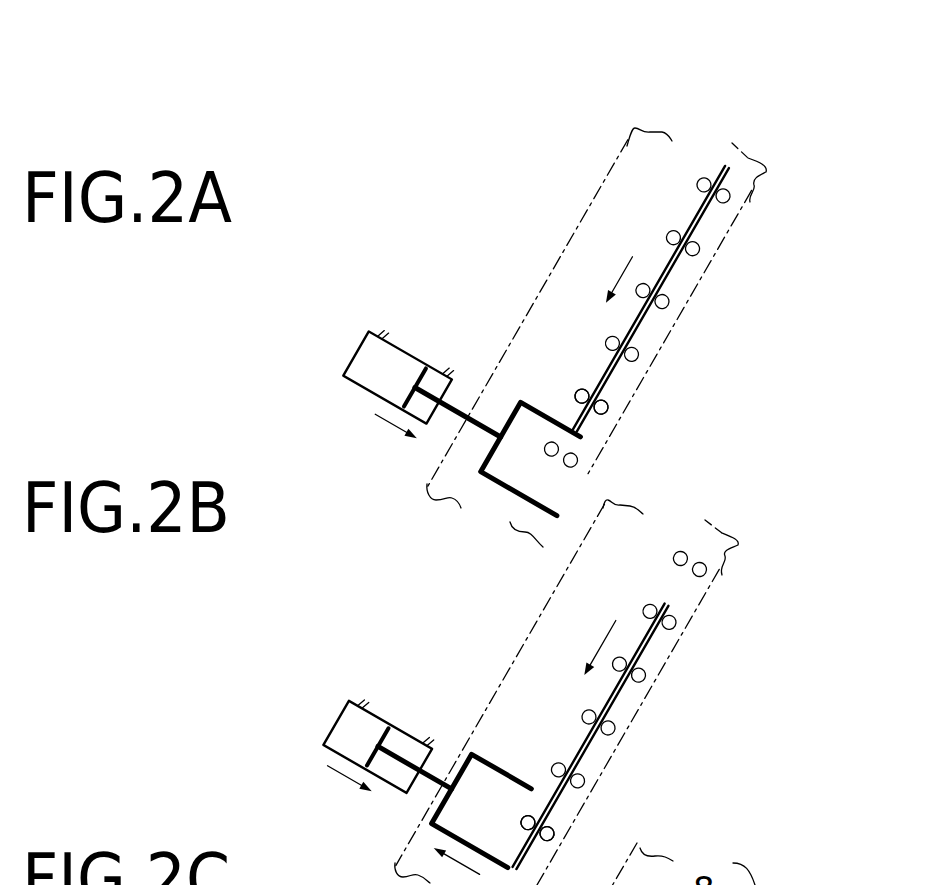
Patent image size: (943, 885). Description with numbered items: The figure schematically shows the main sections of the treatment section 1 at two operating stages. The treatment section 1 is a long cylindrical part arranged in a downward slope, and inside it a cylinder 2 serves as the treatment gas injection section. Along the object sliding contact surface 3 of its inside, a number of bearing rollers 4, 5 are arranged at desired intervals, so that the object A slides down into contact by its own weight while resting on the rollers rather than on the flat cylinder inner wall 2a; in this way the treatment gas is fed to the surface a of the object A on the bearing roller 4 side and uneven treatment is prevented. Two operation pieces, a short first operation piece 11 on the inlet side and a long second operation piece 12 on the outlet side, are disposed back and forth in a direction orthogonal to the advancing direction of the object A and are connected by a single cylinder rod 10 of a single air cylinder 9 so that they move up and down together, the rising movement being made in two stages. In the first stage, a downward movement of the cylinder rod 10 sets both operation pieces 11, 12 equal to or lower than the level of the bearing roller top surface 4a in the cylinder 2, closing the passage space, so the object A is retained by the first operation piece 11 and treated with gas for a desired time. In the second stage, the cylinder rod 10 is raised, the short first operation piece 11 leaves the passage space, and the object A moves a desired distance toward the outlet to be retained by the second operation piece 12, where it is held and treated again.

In FIG. 2A, the treatment section 1 is at (589, 273).
In FIG. 2B, the treatment section 1 is at (612, 692).
In FIG. 2A, the cylinder 2 is at (613, 166).
In FIG. 2B, the cylinder 2 is at (665, 667).
In FIG. 2A, the cylinder inner wall 2a is at (758, 200).
In FIG. 2B, the cylinder inner wall 2a is at (738, 568).
In FIG. 2A, the object sliding contact surface 3 is at (710, 170).
In FIG. 2B, the object sliding contact surface 3 is at (700, 560).
In FIG. 2A, the bearing rollers 4 is at (724, 201).
In FIG. 2B, the bearing rollers 4 is at (706, 573).
In FIG. 2A, the bearing roller top surface 4a is at (672, 230).
In FIG. 2B, the bearing roller top surface 4a is at (591, 714).
In FIG. 2A, the bearing rollers 5 is at (700, 178).
In FIG. 2B, the bearing rollers 5 is at (666, 558).
In FIG. 2A, the air cylinder 9 is at (362, 352).
In FIG. 2B, the air cylinder 9 is at (343, 724).
In FIG. 2A, the cylinder rod 10 is at (455, 405).
In FIG. 2B, the cylinder rod 10 is at (437, 777).
In FIG. 2A, the first operation piece 11 is at (541, 410).
In FIG. 2B, the first operation piece 11 is at (498, 765).
In FIG. 2A, the second operation piece 12 is at (518, 493).
In FIG. 2B, the second operation piece 12 is at (460, 834).
In FIG. 2A, the surface a is at (603, 413).
In FIG. 2B, the surface a is at (552, 853).
In FIG. 2A, the object A is at (684, 273).
In FIG. 2B, the object A is at (632, 705).